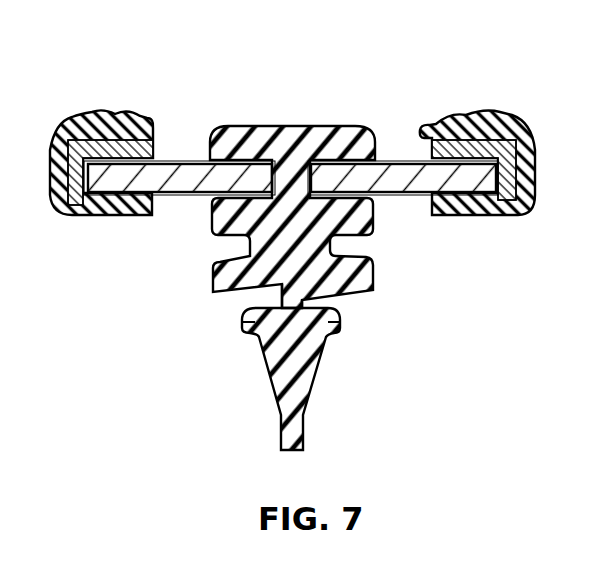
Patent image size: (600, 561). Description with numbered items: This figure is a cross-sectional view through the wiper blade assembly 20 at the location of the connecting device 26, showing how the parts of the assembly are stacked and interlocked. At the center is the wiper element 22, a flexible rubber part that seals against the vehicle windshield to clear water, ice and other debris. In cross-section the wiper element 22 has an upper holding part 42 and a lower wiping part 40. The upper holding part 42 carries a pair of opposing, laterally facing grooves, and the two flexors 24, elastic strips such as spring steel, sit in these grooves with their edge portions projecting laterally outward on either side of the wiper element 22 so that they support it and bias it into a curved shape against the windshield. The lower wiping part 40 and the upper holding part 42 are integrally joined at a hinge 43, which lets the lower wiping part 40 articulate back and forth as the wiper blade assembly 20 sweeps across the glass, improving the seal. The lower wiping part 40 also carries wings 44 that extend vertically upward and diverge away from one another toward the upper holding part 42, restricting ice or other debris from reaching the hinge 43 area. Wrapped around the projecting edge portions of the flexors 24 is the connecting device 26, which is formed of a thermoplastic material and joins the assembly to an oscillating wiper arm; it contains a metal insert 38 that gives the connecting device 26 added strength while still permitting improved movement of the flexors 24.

The wiper blade assembly 20 is at (303, 241).
The wiper element 22 is at (291, 288).
The flexors 24 is at (183, 190).
The connecting device 26 is at (303, 136).
The metal insert 38 is at (514, 138).
The lower wiping part 40 is at (284, 380).
The upper holding part 42 is at (218, 218).
The hinge 43 is at (290, 288).
The wings 44 is at (255, 322).